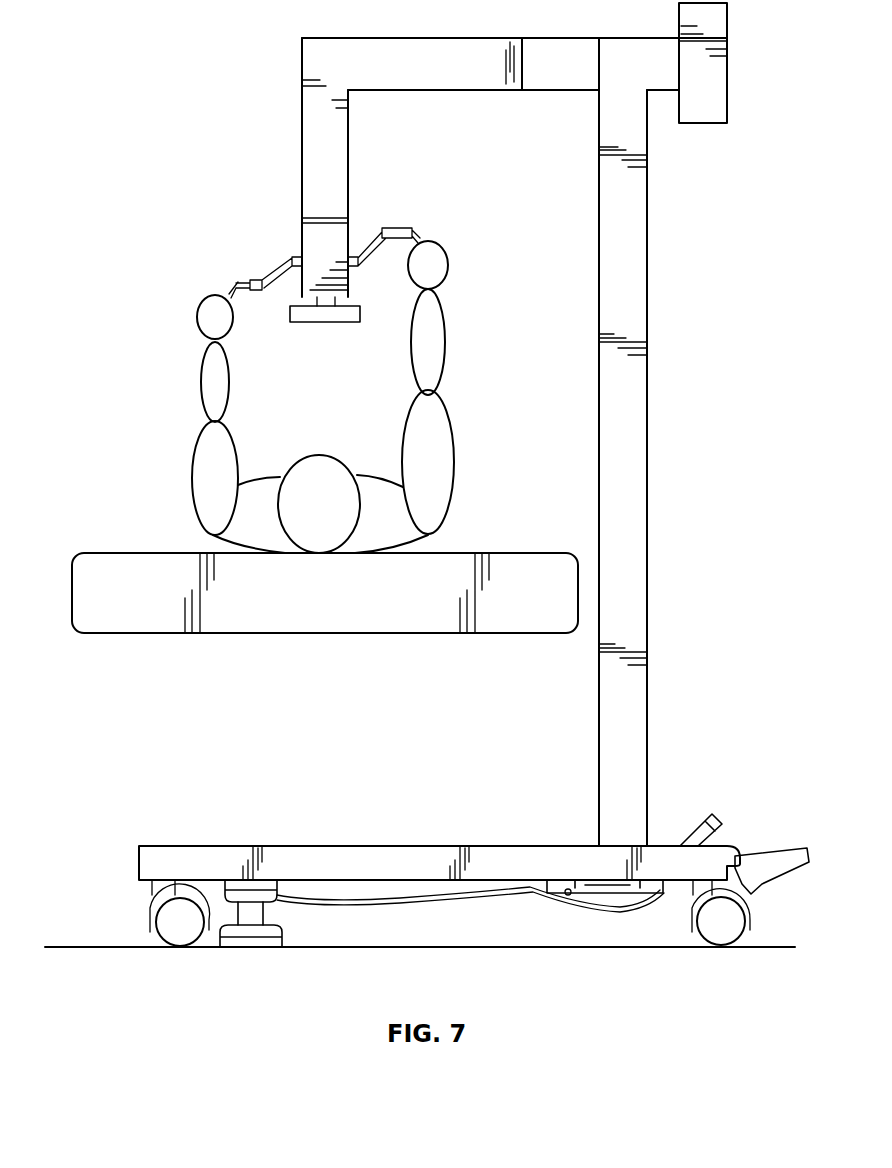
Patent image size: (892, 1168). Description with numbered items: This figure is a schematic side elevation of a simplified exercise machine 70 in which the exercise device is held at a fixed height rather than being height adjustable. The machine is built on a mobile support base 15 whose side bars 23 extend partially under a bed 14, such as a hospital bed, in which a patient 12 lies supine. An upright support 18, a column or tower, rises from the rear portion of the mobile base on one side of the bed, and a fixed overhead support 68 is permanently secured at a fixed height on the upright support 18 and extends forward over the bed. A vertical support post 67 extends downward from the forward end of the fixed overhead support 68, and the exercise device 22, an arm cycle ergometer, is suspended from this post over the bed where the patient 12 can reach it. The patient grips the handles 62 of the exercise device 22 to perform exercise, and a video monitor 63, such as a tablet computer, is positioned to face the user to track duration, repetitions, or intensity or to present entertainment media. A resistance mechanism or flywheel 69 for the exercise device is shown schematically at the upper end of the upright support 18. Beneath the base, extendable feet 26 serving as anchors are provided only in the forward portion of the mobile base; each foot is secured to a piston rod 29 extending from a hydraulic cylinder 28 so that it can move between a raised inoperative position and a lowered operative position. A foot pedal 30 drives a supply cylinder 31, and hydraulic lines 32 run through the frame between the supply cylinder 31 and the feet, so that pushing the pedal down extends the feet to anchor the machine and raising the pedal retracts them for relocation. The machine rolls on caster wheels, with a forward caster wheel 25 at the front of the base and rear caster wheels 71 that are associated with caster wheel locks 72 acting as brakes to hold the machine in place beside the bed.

The patient 12 is at (382, 487).
The bed 14 is at (120, 552).
The mobile support base 15 is at (500, 842).
The upright support 18 is at (637, 403).
The exercise device 22 is at (340, 242).
The side bars 23 is at (403, 850).
The front wheel / caster 25 is at (176, 922).
The extendable feet 26 is at (285, 940).
The hydraulic cylinders 28 is at (262, 887).
The piston rods 29 is at (250, 918).
The foot pedal 30 is at (722, 817).
The supply cylinder 31 is at (615, 903).
The hydraulic lines 32 is at (545, 905).
The handles 62 is at (244, 272).
The video monitor 63 is at (323, 324).
The vertical support post 67 is at (345, 140).
The fixed overhead support 68 is at (405, 40).
The flywheel 69 is at (722, 80).
The exercise machine 70 is at (672, 283).
The rear caster wheels 71 is at (735, 918).
The caster wheel locks 72 is at (780, 850).